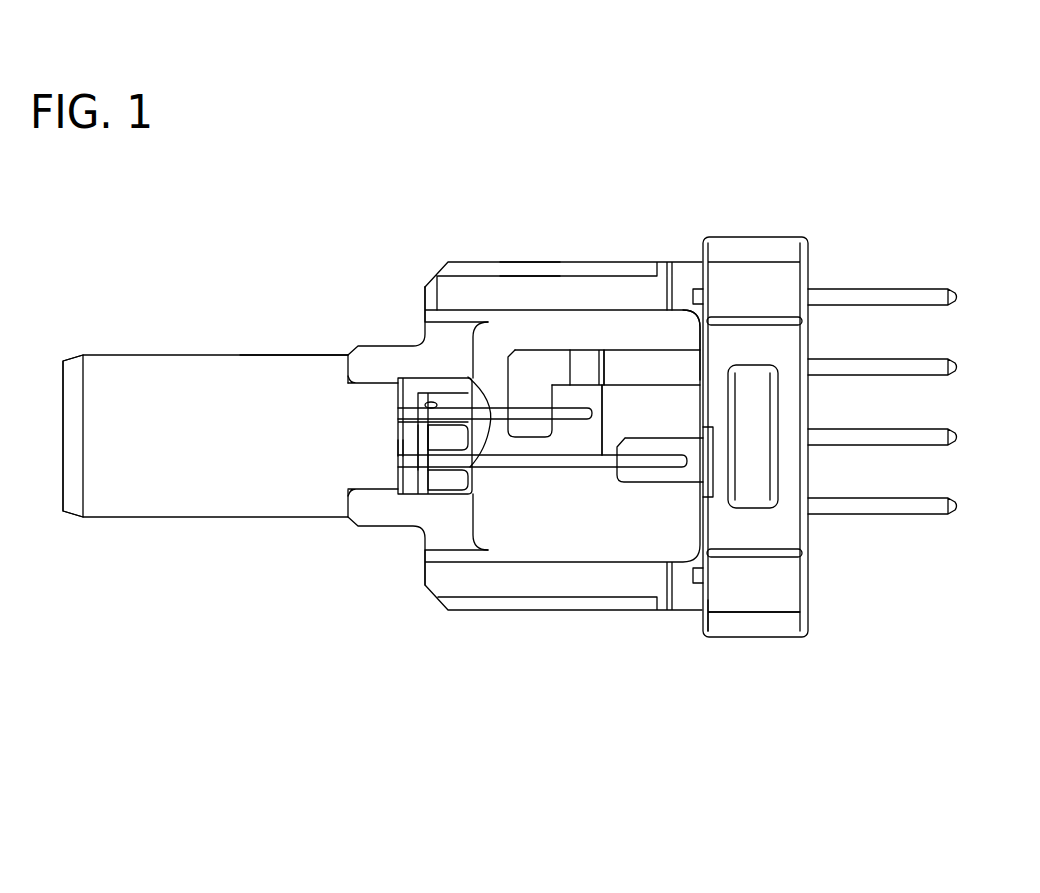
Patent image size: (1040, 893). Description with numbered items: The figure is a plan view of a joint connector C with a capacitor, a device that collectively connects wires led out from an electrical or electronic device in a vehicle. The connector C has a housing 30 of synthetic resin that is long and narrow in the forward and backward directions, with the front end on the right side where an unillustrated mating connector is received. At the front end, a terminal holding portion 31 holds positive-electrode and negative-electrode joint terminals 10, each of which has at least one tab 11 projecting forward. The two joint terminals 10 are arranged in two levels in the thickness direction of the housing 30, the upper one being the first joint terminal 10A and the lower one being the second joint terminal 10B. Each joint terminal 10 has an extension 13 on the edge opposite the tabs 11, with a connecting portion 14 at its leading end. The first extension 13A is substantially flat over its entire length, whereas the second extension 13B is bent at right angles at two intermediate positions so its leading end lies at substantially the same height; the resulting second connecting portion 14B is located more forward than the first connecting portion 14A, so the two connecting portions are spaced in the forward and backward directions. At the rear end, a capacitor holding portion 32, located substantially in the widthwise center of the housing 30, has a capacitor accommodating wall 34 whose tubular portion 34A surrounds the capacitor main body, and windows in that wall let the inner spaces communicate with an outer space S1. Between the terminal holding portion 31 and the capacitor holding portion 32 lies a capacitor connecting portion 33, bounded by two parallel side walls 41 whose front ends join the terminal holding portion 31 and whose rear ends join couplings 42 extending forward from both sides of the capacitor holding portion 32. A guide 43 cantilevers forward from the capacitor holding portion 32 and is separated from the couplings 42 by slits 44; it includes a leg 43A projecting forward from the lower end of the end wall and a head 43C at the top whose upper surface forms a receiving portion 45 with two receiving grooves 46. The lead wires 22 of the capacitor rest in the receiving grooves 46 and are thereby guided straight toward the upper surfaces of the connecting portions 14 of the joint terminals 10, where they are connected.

The joint terminal 10 is at (647, 133).
The first joint terminal 10A is at (652, 445).
The second joint terminal 10B is at (687, 357).
The tab 11 is at (950, 507).
The extension 13 is at (675, 705).
The first extension 13A is at (637, 478).
The second extension 13B is at (683, 377).
The connecting portion 14 is at (573, 683).
The first connecting portion 14A is at (623, 477).
The second connecting portion 14B is at (532, 430).
The lead wire 22 is at (602, 460).
The housing 30 is at (775, 593).
The terminal holding portion 31 is at (745, 595).
The capacitor holding portion 32 is at (155, 382).
The capacitor connecting portion 33 is at (518, 282).
The capacitor accommodating wall 34 is at (220, 383).
The tubular portion 34A is at (283, 383).
The side wall 41 is at (500, 282).
The coupling 42 is at (368, 367).
The guide 43 is at (445, 445).
The leg 43A is at (405, 448).
The head 43C is at (437, 452).
The slit 44 is at (457, 443).
The receiving portion 45 is at (442, 382).
The receiving groove 46 is at (420, 457).
The joint connector C is at (445, 178).
The outer space S1 is at (494, 351).